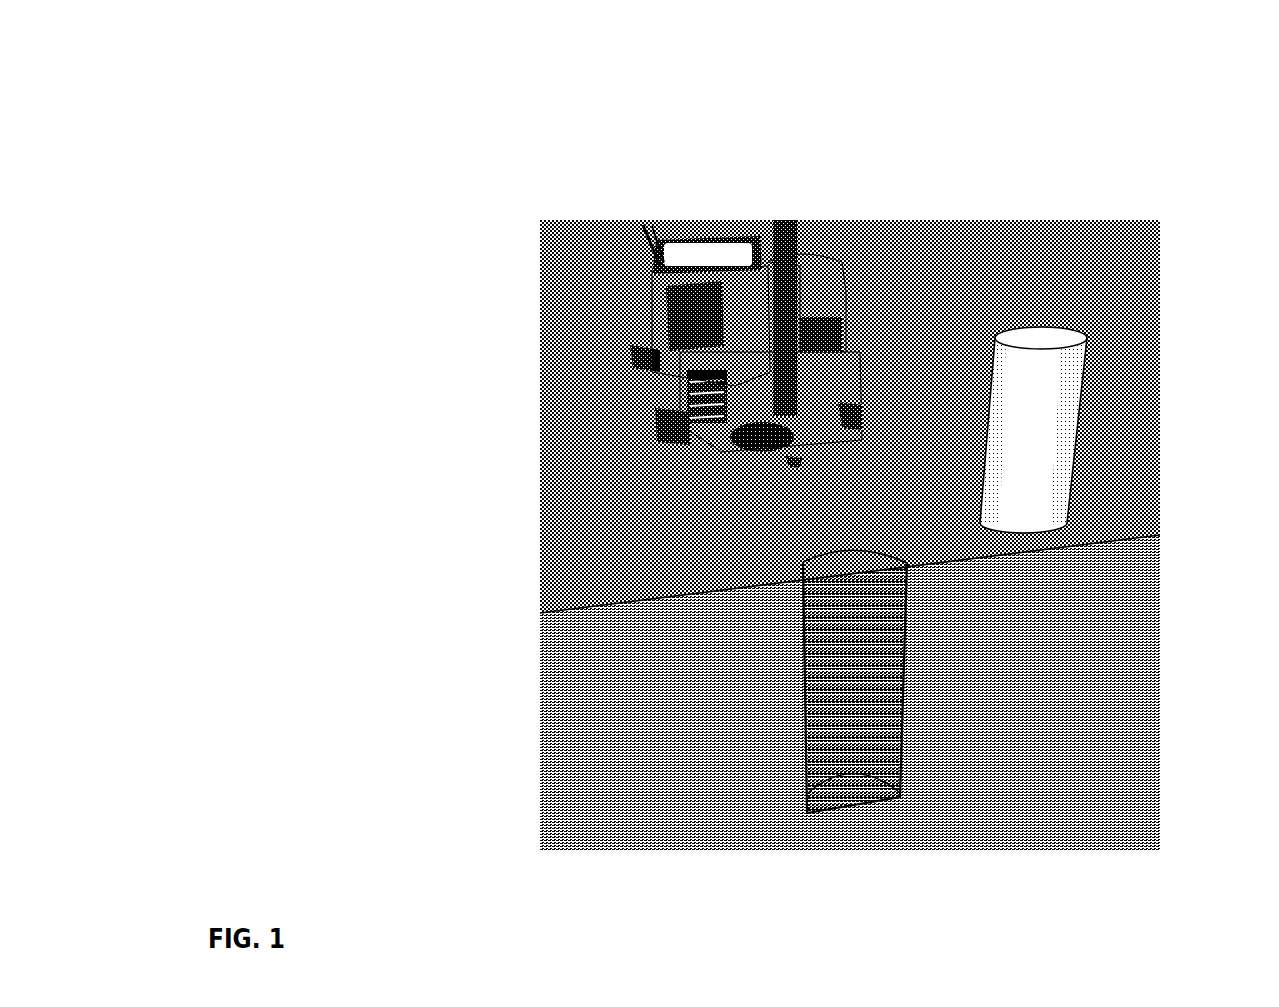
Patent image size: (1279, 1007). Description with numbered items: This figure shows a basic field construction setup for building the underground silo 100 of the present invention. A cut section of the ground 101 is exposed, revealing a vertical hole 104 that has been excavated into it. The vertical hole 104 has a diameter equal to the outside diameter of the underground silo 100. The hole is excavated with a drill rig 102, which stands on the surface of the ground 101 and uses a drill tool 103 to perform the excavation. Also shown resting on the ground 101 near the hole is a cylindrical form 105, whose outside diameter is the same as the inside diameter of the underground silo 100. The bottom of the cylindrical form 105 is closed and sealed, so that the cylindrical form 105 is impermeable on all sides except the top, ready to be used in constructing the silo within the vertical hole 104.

The underground silo 100 is at (296, 120).
The ground 101 is at (583, 697).
The drill rig 102 is at (703, 242).
The drill tool 103 is at (748, 450).
The vertical hole 104 is at (825, 567).
The cylindrical form 105 is at (1067, 385).